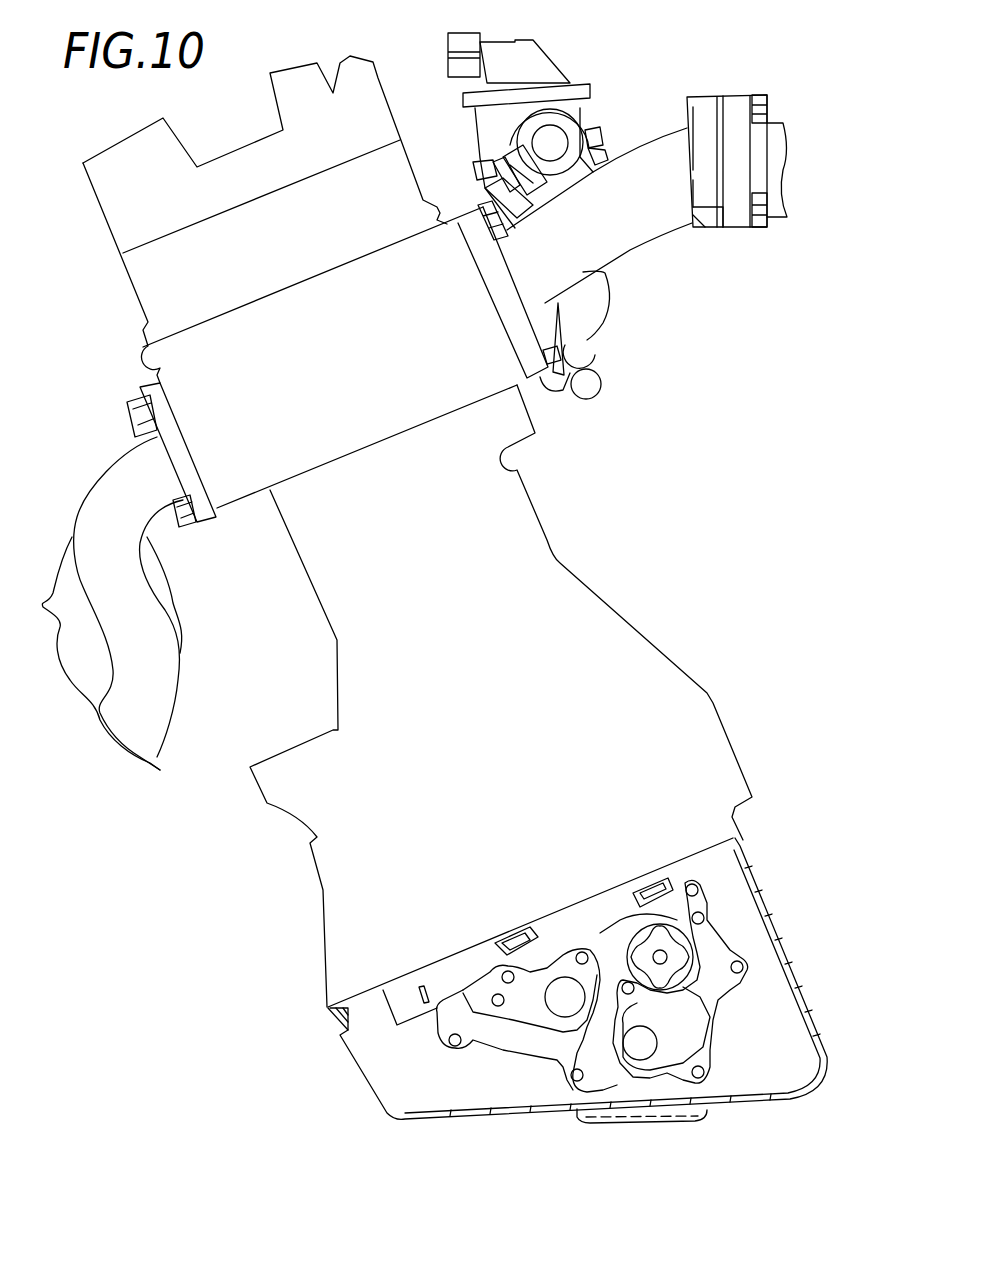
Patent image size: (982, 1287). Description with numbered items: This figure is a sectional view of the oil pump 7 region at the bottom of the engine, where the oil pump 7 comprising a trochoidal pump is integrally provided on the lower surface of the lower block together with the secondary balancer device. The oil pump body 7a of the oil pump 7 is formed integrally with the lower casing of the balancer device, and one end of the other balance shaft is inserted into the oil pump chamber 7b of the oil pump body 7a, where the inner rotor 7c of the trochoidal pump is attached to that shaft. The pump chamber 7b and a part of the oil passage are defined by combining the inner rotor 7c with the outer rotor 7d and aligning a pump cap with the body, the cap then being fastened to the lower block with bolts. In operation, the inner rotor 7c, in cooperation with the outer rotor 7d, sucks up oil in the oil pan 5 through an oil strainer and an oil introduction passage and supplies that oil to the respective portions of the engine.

The oil pan 5 is at (825, 1037).
The oil pump 7 is at (643, 953).
The oil pump body 7a is at (540, 1066).
The oil pump chamber 7b is at (690, 867).
The inner rotor 7c is at (700, 937).
The outer rotor 7d is at (677, 980).